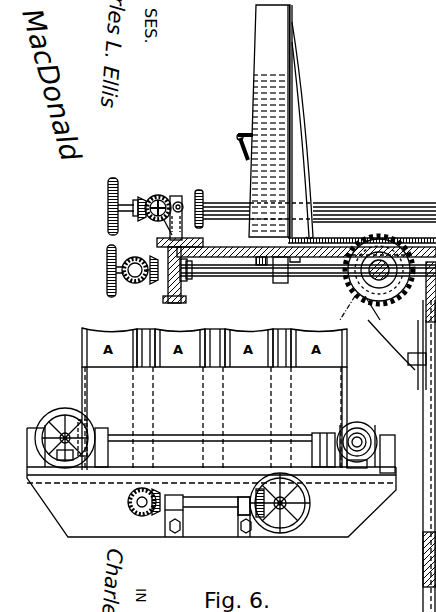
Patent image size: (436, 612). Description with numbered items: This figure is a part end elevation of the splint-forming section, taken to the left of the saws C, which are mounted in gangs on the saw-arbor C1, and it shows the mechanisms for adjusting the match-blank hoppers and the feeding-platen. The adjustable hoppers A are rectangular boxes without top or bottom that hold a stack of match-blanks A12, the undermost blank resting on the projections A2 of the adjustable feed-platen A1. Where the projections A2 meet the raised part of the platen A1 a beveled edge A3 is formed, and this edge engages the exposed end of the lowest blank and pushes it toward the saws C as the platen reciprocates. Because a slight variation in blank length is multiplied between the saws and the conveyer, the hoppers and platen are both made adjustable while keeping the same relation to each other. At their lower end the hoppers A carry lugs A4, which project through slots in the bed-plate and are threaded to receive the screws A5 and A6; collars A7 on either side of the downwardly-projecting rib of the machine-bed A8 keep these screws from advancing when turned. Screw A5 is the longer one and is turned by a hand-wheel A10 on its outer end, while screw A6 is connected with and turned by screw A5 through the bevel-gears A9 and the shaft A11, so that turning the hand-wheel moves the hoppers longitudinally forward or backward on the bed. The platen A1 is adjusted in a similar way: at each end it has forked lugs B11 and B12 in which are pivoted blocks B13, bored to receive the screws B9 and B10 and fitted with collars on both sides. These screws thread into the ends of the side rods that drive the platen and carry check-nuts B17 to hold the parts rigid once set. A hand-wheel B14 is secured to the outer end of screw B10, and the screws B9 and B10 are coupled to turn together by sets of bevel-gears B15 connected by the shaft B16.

The adjustable hopper A is at (256, 33).
The adjustable feed-platen A1 is at (157, 242).
The projections A2 is at (297, 263).
The beveled edge A3 is at (248, 242).
The lugs A4 is at (281, 284).
The screw A5 is at (235, 277).
The screw A6 is at (280, 503).
The collars A7 is at (189, 280).
The downwardly-projecting rib of the machine-bed A8 is at (344, 240).
The bevel-gears A9 is at (137, 284).
The hand-wheel A10 is at (107, 271).
The shaft A11 is at (244, 506).
The match-blank A12 is at (261, 266).
The screw B9 is at (383, 472).
The screw B10 is at (180, 202).
The forked lug B11 is at (375, 490).
The forked lug B12 is at (176, 199).
The blocks B13 is at (160, 196).
The hand-wheel B14 is at (110, 198).
The bevel-gears B15 is at (140, 197).
The shaft B16 is at (251, 440).
The check-nuts B17 is at (200, 200).
The saws C is at (377, 303).
The saw-arbor C1 is at (362, 284).